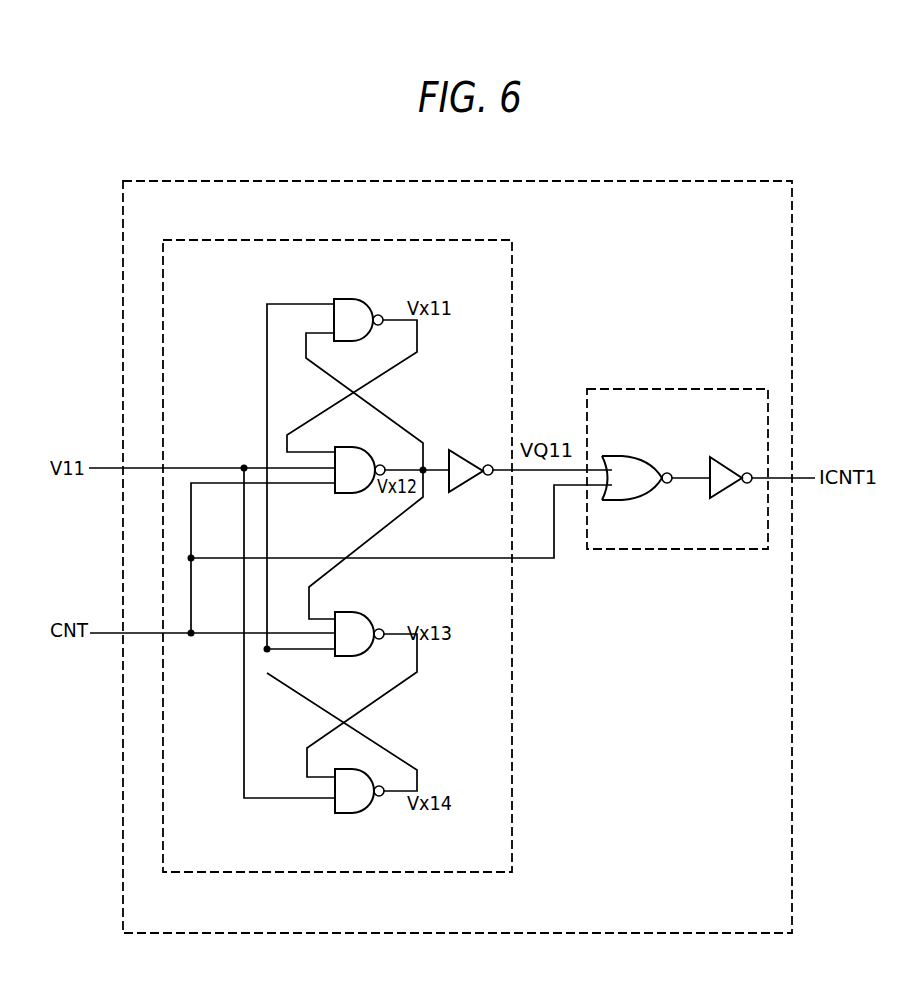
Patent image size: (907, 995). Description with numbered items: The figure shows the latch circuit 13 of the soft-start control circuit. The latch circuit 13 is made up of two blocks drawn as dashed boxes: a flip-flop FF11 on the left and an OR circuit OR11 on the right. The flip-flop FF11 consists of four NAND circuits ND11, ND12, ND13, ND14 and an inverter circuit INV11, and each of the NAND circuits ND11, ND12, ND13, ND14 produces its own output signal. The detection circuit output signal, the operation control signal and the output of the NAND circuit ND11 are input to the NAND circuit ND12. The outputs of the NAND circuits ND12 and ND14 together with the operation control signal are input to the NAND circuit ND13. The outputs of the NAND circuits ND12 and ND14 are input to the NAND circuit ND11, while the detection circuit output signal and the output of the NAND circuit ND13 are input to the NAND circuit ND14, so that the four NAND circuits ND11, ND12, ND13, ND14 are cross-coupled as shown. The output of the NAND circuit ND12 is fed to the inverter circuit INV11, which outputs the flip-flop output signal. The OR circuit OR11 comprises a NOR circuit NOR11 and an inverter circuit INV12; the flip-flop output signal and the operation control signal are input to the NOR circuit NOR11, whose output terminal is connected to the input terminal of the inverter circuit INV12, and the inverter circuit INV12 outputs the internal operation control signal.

The latch circuit 13 is at (543, 181).
The flip-flop FF11 is at (415, 240).
The OR circuit OR11 is at (640, 388).
The NAND circuit ND11 is at (359, 305).
The NAND circuit ND12 is at (356, 459).
The NAND circuit ND13 is at (360, 621).
The NAND circuit ND14 is at (357, 804).
The inverter circuit INV11 is at (462, 458).
The inverter circuit INV12 is at (726, 466).
The NOR circuit NOR11 is at (634, 464).